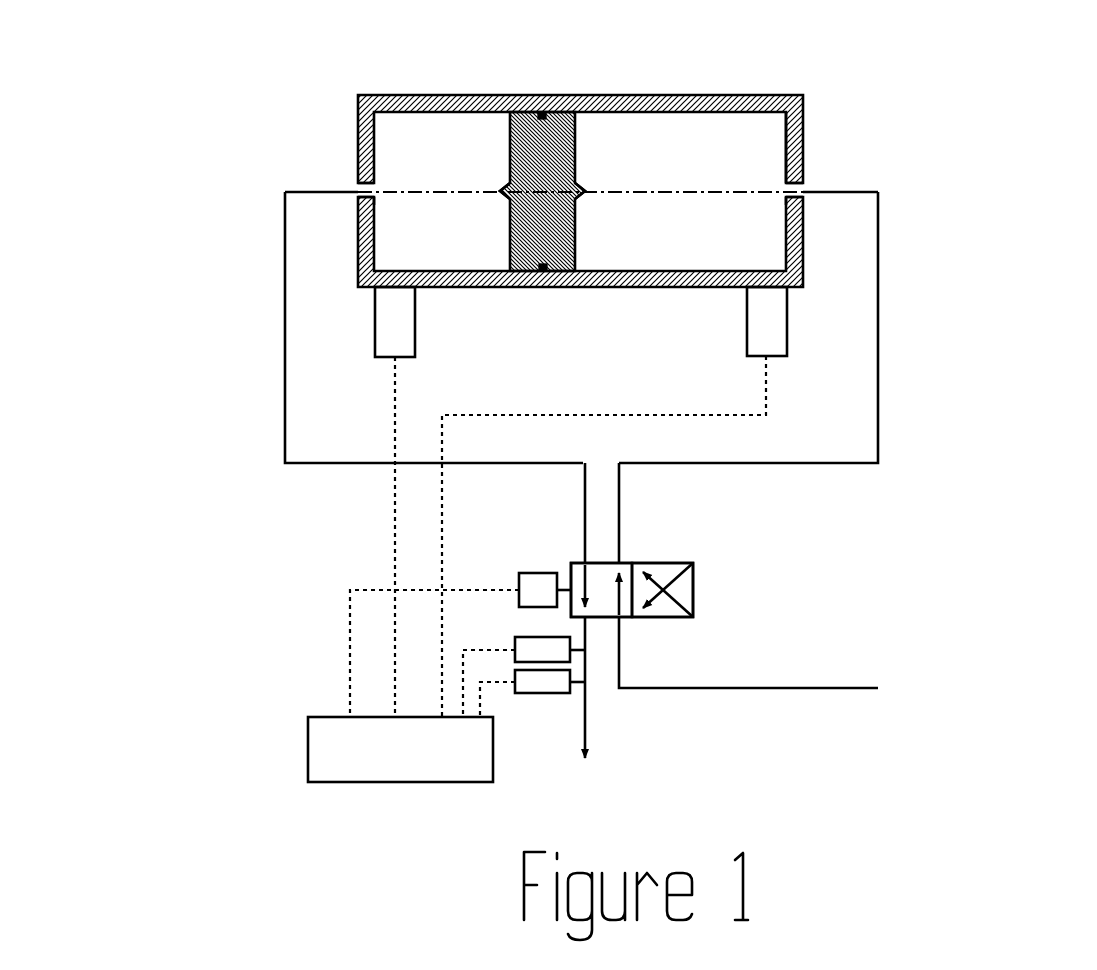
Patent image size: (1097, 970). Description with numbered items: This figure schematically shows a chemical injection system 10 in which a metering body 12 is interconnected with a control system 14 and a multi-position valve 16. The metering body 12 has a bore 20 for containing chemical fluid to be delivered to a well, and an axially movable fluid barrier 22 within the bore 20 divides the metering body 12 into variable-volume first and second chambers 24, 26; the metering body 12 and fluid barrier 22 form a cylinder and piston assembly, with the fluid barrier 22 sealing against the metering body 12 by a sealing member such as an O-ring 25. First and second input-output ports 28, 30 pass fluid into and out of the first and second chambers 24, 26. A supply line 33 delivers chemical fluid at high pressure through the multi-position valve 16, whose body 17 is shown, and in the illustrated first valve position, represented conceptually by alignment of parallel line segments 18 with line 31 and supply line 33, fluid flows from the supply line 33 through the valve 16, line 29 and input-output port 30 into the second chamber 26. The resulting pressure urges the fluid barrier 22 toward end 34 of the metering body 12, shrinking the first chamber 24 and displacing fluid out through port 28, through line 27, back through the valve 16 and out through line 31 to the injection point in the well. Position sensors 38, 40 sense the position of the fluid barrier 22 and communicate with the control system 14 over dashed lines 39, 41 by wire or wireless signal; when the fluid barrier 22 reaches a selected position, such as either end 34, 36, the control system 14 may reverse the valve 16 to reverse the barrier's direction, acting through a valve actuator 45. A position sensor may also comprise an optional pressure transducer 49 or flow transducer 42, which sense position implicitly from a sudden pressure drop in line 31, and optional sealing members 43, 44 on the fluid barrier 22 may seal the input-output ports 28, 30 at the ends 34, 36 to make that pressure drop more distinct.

The chemical injection system 10 is at (168, 307).
The metering body 12 is at (623, 95).
The control system 14 is at (422, 767).
The multi-position valve 16 is at (705, 562).
The body 17 is at (660, 562).
The parallel line segments 18 is at (597, 562).
The bore 20 is at (753, 133).
The fluid barrier 22 is at (553, 235).
The first chamber 24 is at (457, 168).
The O-ring 25 is at (547, 103).
The second chamber 26 is at (702, 168).
The line 27 is at (285, 422).
The first input-output port 28 is at (362, 185).
The line 29 is at (878, 318).
The second input-output port 30 is at (803, 183).
The line 31 is at (592, 740).
The supply line 33 is at (775, 688).
The end 34 is at (377, 200).
The end 36 is at (787, 198).
The position sensor 38 is at (408, 328).
The dashed line 39 is at (390, 413).
The position sensor 40 is at (760, 317).
The dashed line 41 is at (767, 390).
The flow transducer 42 is at (547, 683).
The sealing member 43 is at (502, 192).
The sealing member 44 is at (584, 193).
The valve actuator 45 is at (545, 583).
The pressure transducer 49 is at (543, 648).